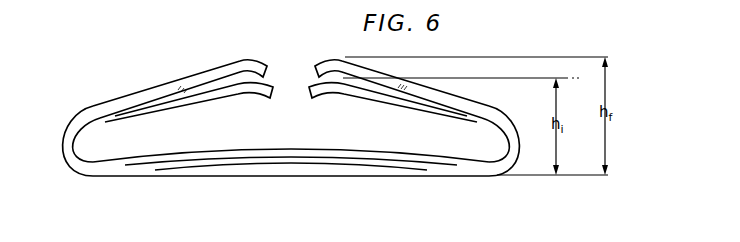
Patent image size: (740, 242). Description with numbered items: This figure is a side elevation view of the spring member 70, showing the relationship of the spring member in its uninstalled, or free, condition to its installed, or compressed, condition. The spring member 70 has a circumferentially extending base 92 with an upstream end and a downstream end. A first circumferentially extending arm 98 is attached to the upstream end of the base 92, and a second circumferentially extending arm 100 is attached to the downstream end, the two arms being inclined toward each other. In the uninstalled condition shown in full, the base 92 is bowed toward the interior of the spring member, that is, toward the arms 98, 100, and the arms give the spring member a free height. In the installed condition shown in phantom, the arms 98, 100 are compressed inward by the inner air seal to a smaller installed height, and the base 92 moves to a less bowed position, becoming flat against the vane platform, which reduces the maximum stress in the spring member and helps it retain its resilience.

The spring member 70 is at (95, 93).
The base 92 is at (290, 148).
The first circumferentially extending arm 98 is at (192, 76).
The second circumferentially extending arm 100 is at (390, 76).